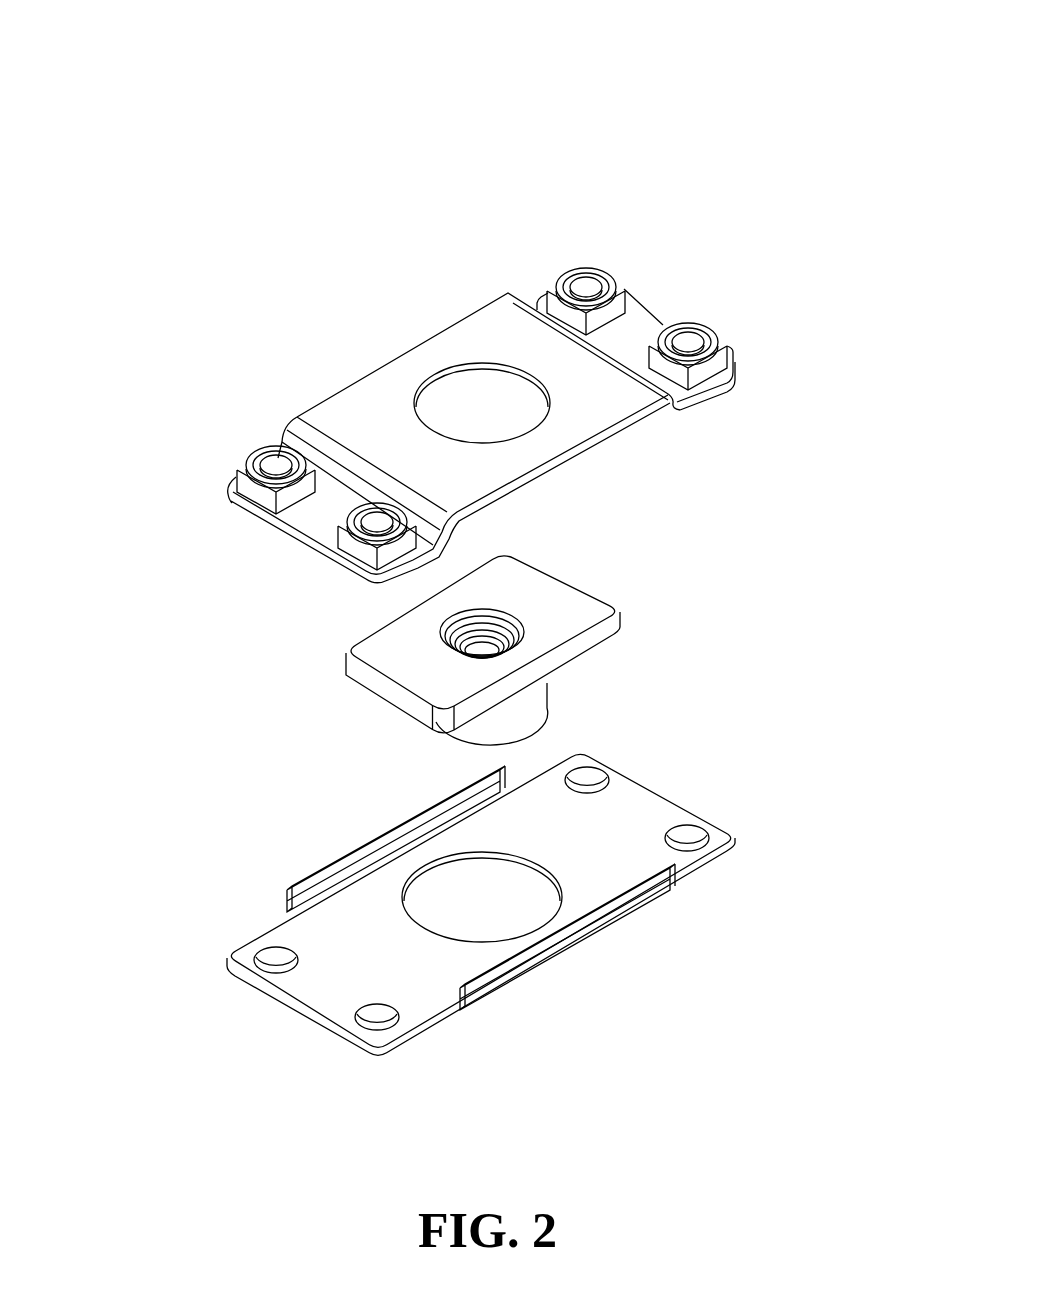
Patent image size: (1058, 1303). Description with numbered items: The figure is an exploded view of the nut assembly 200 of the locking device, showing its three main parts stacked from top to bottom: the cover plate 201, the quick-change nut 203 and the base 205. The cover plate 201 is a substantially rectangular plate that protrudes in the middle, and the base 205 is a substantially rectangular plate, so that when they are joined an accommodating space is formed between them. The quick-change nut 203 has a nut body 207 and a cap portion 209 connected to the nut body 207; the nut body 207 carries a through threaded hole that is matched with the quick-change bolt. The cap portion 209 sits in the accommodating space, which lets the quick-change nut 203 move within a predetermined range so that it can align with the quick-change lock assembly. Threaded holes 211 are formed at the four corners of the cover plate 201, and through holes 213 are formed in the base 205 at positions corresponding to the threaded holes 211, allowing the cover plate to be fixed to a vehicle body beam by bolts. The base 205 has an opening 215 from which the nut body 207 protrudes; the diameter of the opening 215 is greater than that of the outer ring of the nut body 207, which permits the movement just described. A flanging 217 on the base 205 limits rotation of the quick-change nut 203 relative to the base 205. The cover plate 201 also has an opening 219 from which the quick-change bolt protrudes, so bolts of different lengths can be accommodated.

The nut assembly 200 is at (202, 60).
The cover plate 201 is at (503, 393).
The quick-change nut 203 is at (552, 602).
The base 205 is at (523, 865).
The nut body 207 is at (525, 709).
The cap portion 209 is at (368, 650).
The threaded holes 211 is at (272, 460).
The through holes 213 is at (272, 962).
The opening 215 is at (450, 883).
The flanging 217 is at (623, 917).
The opening 219 is at (447, 403).